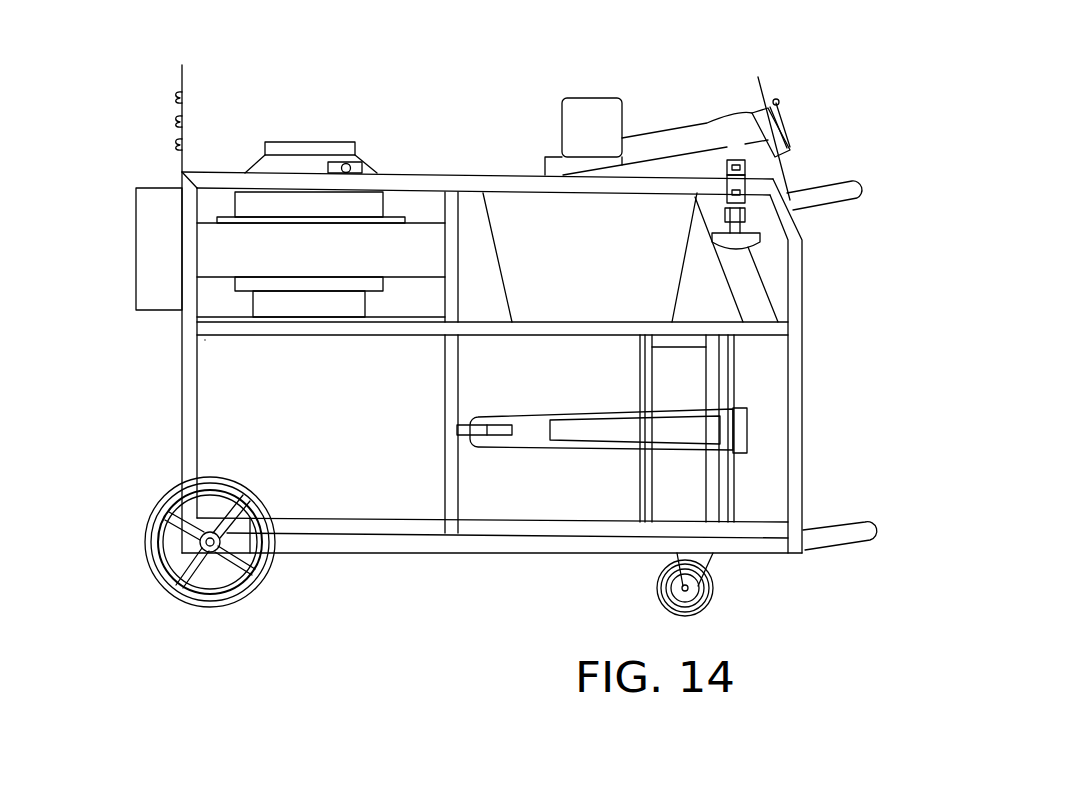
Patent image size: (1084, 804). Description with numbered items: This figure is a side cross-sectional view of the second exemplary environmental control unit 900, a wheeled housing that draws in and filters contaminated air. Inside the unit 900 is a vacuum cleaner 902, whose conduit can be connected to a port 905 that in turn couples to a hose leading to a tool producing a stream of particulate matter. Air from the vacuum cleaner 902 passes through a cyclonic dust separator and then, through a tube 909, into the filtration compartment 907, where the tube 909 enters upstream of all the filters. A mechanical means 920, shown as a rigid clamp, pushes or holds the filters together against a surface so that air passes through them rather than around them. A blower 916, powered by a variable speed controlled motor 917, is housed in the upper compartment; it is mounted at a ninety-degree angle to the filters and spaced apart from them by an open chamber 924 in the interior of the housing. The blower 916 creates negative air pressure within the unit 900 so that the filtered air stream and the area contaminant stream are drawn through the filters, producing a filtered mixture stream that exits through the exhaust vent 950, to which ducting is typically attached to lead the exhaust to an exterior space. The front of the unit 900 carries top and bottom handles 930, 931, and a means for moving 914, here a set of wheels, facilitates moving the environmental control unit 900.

The environmental control unit 900 is at (130, 362).
The vacuum cleaner 902 is at (670, 104).
The port 905 is at (782, 112).
The filtration compartment 907 is at (750, 472).
The tube 909 is at (759, 295).
The means for moving 914 is at (214, 608).
The blower 916 is at (287, 247).
The variable speed controlled motor 917 is at (337, 205).
The mechanical means for pushing or holding the filters 920 is at (527, 433).
The open chamber 924 is at (322, 458).
The top handle 930 is at (853, 176).
The bottom handle 931 is at (853, 537).
The exhaust vent 950 is at (160, 233).